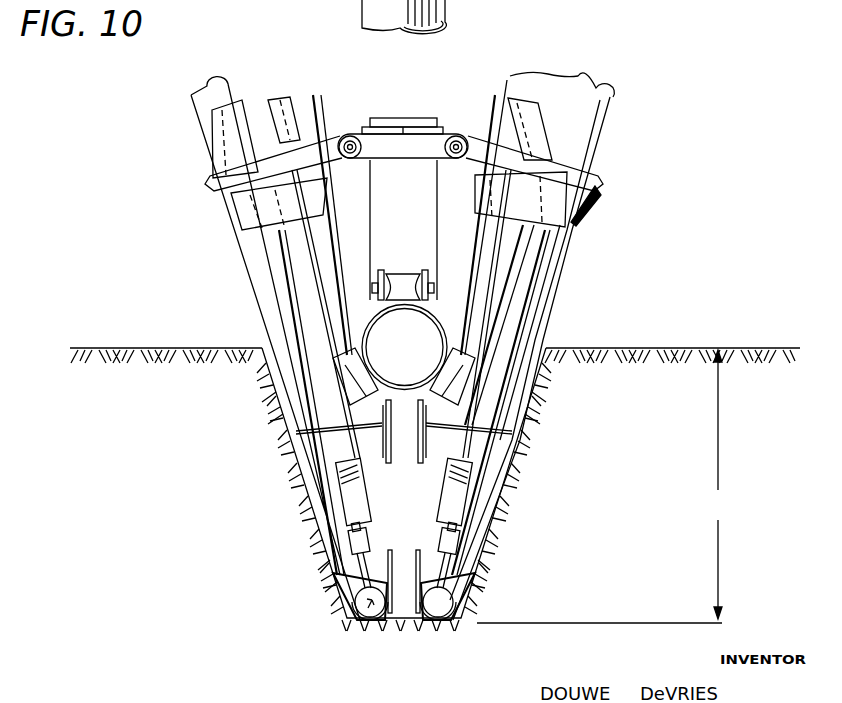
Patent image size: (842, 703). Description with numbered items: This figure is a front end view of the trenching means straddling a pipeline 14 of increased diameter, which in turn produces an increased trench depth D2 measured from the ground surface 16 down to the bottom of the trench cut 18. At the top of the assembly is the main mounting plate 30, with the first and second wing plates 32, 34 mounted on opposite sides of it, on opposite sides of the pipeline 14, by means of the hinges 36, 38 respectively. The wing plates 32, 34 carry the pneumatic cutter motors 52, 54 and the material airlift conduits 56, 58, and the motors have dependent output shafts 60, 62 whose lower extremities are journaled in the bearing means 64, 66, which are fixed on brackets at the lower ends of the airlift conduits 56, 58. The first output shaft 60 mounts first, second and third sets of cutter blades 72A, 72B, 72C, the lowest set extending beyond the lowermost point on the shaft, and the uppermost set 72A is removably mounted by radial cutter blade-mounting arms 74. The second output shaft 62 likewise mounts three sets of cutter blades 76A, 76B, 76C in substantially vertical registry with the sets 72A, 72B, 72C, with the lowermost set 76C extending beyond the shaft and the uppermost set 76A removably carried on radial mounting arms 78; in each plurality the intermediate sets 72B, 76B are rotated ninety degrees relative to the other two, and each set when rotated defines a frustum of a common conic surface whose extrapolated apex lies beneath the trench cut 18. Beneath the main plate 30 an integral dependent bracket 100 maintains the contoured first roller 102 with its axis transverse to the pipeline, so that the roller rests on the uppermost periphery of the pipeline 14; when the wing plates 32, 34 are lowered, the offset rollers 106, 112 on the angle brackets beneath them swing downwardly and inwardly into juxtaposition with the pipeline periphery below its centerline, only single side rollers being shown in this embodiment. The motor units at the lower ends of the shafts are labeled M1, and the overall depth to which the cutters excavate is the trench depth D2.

The pipeline 14 is at (448, 8).
The ground surface 16 is at (669, 348).
The trench cut 18 is at (546, 337).
The main mounting plate 30 is at (417, 160).
The first wing plate 32 is at (598, 183).
The second wing plate 34 is at (207, 183).
The hinge 36 is at (456, 137).
The hinge 38 is at (350, 137).
The pneumatic cutter motor 52 is at (520, 118).
The pneumatic cutter motor 54 is at (307, 110).
The material airlift conduit 56 is at (610, 118).
The material airlift conduit 58 is at (195, 118).
The first output shaft 60 is at (495, 258).
The second output shaft 62 is at (313, 253).
The bearing means 64 is at (457, 543).
The bearing means 66 is at (355, 543).
The first set of cutter blades 72A is at (500, 455).
The second set of cutter blades 72B is at (460, 497).
The third set of cutter blades 72C is at (480, 592).
The radial cutter blade-mounting arms 74 is at (485, 441).
The first set of cutter blades 76A is at (280, 458).
The second set of cutter blades 76B is at (350, 500).
The third set of cutter blades 76C is at (330, 587).
The radial cutter blade mounting arms 78 is at (320, 443).
The dependent bracket 100 is at (397, 118).
The contoured first roller 102 is at (403, 285).
The first offset roller 106 is at (455, 377).
The first offset roller 112 is at (355, 380).
The wheel motor M1 is at (350, 622).
The trench depth D2 is at (714, 484).